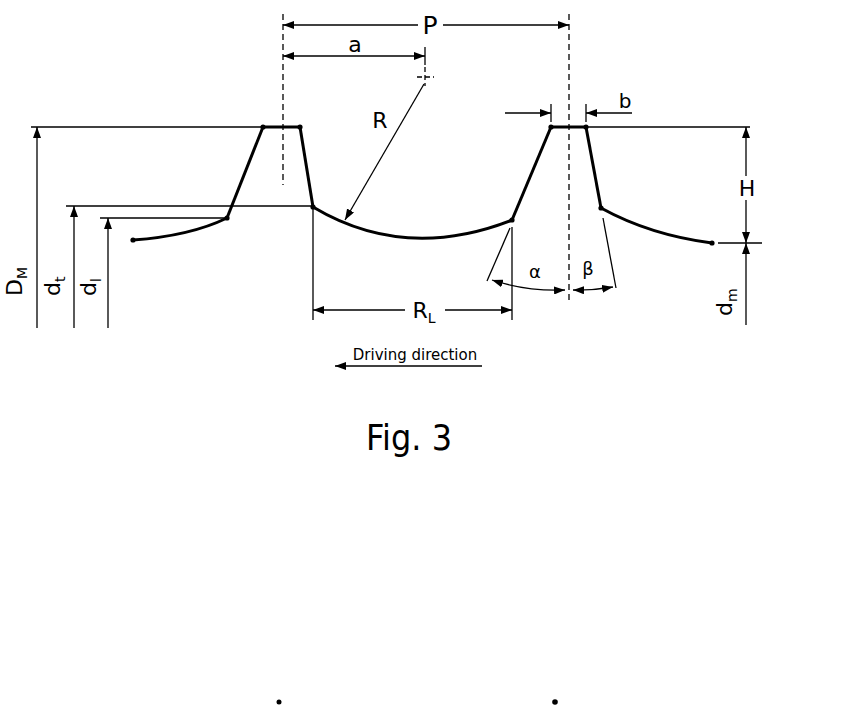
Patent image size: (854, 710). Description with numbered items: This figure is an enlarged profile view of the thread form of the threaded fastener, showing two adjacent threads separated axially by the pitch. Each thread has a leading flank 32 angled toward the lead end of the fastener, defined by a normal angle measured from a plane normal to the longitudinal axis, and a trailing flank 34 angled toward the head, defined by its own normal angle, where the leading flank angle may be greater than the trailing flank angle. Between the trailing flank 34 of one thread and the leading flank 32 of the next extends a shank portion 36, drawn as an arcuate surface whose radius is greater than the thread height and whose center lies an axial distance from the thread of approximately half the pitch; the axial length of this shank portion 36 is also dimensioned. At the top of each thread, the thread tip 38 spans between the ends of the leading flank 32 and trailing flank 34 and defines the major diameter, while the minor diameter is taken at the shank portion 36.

The leading flank 32 is at (252, 163).
The trailing flank 34 is at (305, 152).
The shank portion 36 is at (405, 240).
The thread tip 38 is at (279, 126).